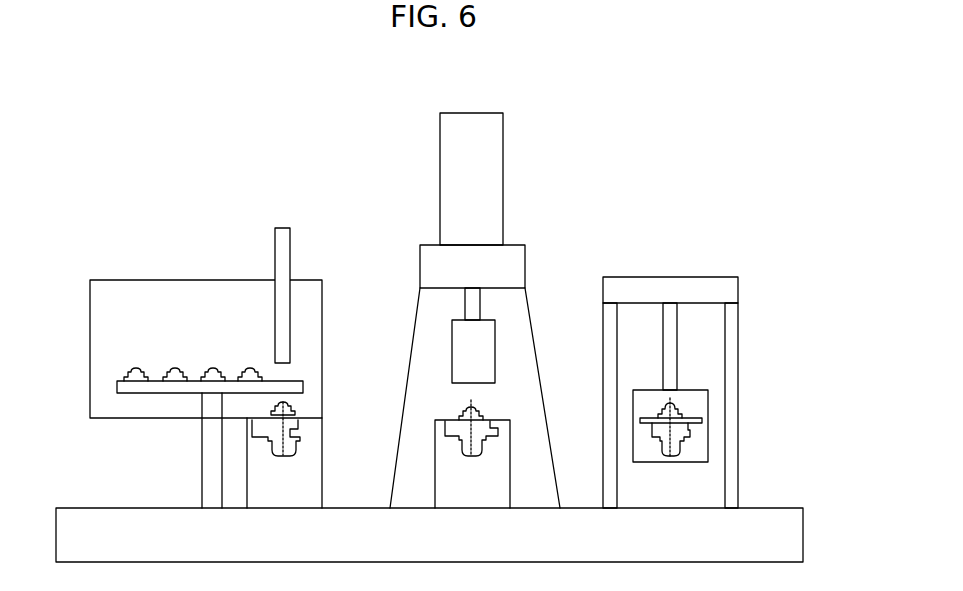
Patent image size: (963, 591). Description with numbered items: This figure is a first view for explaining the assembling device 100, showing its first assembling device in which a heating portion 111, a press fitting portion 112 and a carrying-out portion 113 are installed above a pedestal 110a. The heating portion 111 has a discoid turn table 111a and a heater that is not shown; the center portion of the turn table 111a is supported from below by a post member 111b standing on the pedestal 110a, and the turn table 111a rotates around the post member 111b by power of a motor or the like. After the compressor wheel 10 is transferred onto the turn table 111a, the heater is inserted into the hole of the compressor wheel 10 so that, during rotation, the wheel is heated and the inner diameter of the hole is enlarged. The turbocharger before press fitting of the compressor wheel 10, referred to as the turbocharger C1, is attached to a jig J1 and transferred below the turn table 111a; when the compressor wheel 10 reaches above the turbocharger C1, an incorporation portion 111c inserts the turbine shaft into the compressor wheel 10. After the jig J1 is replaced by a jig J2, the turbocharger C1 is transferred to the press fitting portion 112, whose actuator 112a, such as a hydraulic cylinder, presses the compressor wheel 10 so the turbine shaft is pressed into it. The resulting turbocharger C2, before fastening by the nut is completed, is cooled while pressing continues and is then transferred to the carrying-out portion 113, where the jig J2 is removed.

The assembling device 100 is at (825, 40).
The pedestal 110a is at (455, 551).
The heating portion 111 is at (92, 280).
The turn table 111a is at (117, 383).
The post member 111b is at (202, 487).
The incorporation portion 111c is at (278, 228).
The compressor wheel 10 is at (205, 368).
The jig J1 is at (297, 498).
The turbocharger C1 is at (298, 437).
The press fitting portion 112 is at (420, 257).
The actuator 112a is at (495, 350).
The jig J2 is at (483, 500).
The turbocharger C2 is at (490, 425).
The carrying-out portion 113 is at (657, 277).